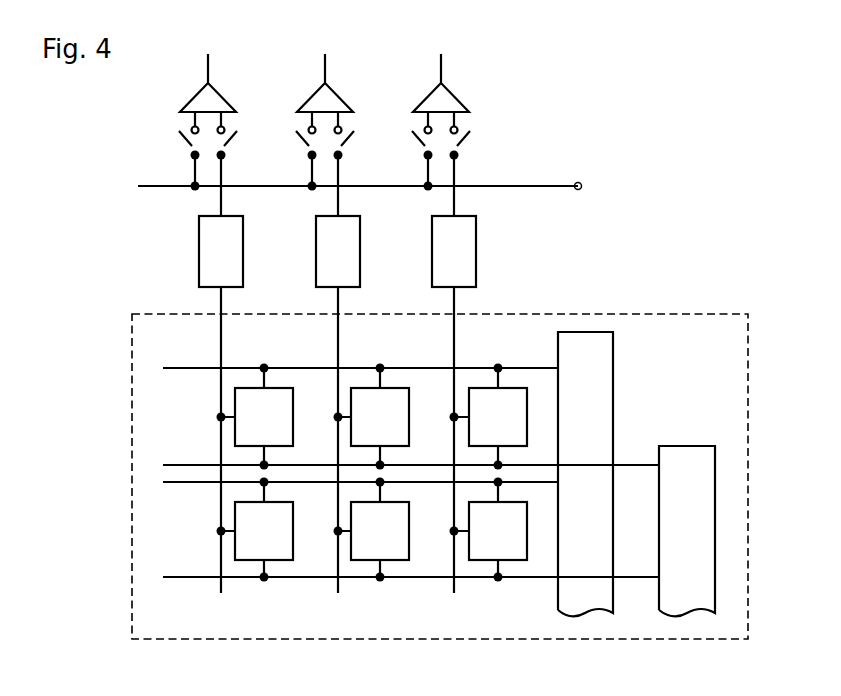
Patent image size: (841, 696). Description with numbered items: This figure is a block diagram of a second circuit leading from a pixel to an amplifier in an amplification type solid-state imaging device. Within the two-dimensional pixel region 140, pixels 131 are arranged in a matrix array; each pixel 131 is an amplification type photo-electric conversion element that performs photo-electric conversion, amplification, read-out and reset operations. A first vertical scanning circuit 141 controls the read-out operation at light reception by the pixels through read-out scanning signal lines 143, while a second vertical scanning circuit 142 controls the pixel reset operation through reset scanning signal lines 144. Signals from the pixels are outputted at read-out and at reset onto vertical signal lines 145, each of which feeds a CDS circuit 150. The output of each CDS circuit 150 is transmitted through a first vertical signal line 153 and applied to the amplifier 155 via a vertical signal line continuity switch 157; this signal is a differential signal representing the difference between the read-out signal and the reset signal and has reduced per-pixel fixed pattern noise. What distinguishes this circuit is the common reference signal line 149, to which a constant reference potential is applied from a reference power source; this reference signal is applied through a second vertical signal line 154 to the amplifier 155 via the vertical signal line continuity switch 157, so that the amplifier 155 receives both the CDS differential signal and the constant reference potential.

The pixel 131 is at (478, 388).
The two-dimensional pixel region 140 is at (703, 314).
The first vertical scanning circuit 141 is at (613, 355).
The second vertical scanning circuit 142 is at (697, 446).
The read-out scanning signal line 143 is at (531, 368).
The reset scanning signal line 144 is at (637, 465).
The vertical signal line 145 is at (454, 342).
The common reference signal line 149 is at (487, 187).
The CDS circuit 150 is at (476, 268).
The first vertical signal line 153 is at (457, 170).
The second vertical signal line 154 is at (426, 169).
The amplifier 155 is at (452, 91).
The vertical signal line continuity switch 157 is at (478, 133).